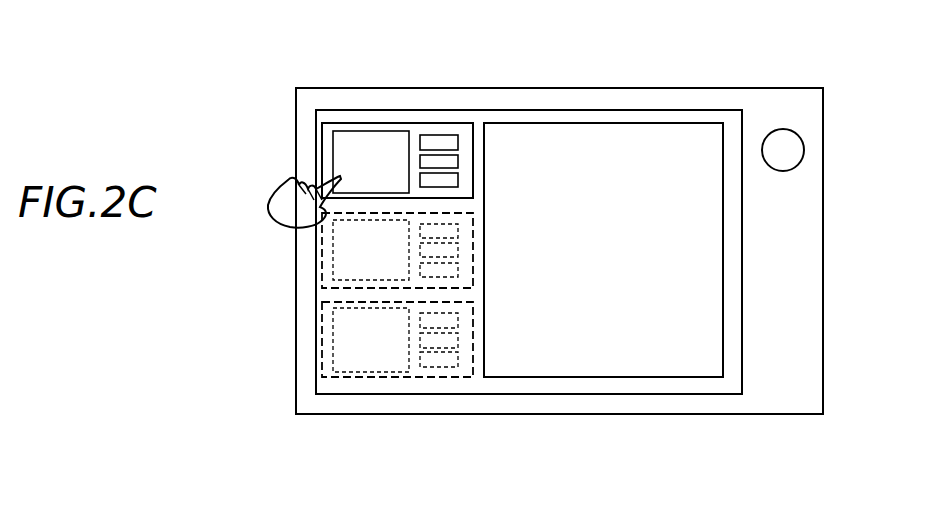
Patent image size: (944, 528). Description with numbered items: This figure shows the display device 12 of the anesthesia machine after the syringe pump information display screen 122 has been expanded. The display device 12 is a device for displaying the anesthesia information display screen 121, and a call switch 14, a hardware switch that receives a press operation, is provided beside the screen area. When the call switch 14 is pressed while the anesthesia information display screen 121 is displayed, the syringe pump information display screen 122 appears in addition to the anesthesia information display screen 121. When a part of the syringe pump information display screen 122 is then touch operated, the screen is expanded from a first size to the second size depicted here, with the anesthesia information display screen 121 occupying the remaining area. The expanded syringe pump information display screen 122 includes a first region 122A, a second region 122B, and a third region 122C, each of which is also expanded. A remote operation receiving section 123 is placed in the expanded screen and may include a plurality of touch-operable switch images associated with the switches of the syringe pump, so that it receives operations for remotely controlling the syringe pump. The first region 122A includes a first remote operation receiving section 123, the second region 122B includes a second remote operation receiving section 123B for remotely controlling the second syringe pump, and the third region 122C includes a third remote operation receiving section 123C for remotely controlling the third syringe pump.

The display device 12 is at (838, 117).
The call switch 14 is at (805, 150).
The anesthesia information display screen 121 is at (610, 157).
The syringe pump information display screen 122 is at (392, 121).
The first region 122A is at (327, 151).
The second region 122B is at (323, 263).
The third region 122C is at (323, 347).
The remote operation receiving section 123 is at (447, 132).
The second remote operation receiving section 123B is at (457, 280).
The third remote operation receiving section 123C is at (443, 365).